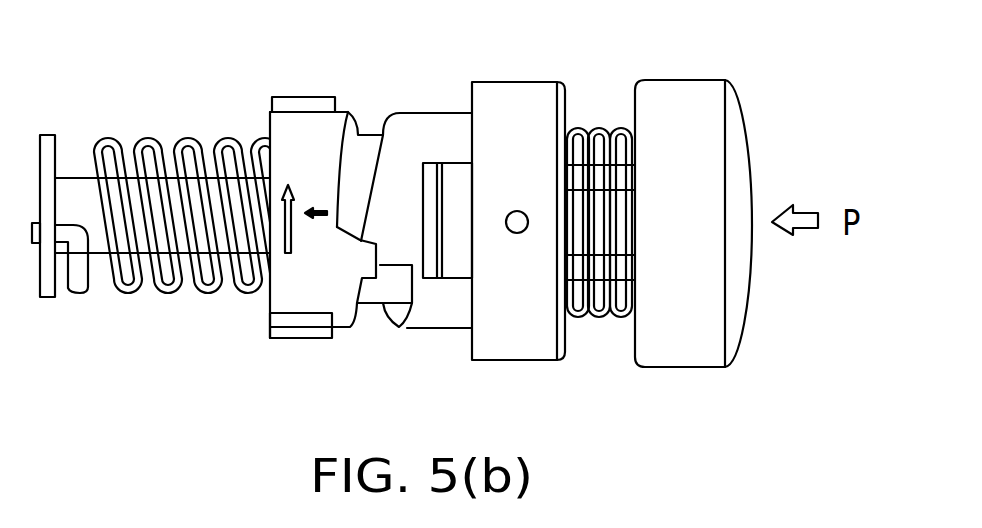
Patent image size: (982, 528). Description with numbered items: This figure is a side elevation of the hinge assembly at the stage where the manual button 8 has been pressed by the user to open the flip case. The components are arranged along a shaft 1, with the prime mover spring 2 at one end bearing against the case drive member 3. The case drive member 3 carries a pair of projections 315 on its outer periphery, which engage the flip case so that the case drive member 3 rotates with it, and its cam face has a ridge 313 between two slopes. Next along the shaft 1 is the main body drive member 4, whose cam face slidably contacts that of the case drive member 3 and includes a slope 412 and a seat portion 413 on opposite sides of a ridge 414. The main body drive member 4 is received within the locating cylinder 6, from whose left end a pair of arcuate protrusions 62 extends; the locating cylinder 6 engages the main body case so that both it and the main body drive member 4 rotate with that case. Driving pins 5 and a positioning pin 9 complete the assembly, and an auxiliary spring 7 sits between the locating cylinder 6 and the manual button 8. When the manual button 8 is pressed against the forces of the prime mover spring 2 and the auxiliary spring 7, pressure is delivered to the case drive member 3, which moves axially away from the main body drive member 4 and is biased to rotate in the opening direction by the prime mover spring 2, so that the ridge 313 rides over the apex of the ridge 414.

The shaft 1 is at (77, 202).
The prime mover spring 2 is at (153, 150).
The case drive member 3 is at (297, 293).
The projections 315 is at (285, 103).
The ridge 313 is at (378, 258).
The main body drive member 4 is at (412, 157).
The slope 412 is at (397, 308).
The ridge 414 is at (363, 222).
The seat portion 413 is at (413, 287).
The arcuate protrusions 62 is at (459, 193).
The locating cylinder 6 is at (506, 128).
The positioning pin 9 is at (517, 222).
The driving pins 5 is at (574, 272).
The auxiliary spring 7 is at (600, 137).
The manual button 8 is at (688, 110).